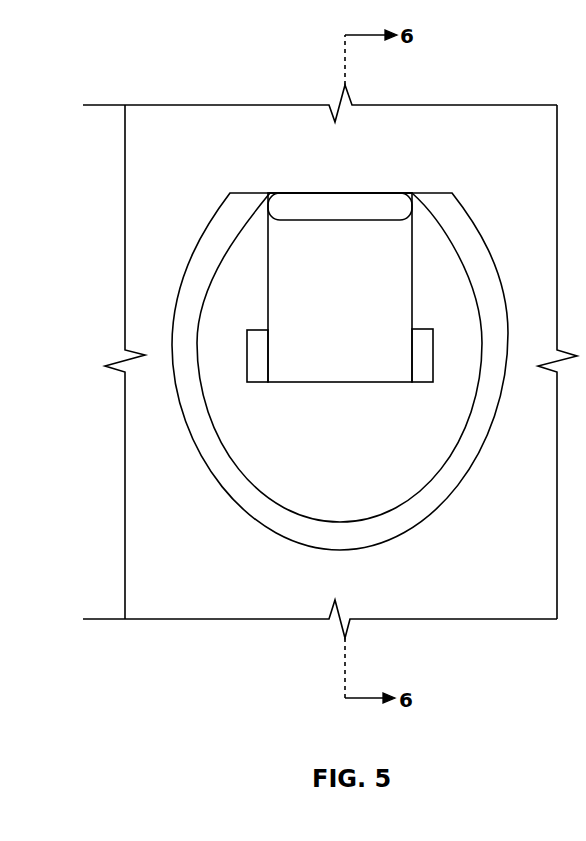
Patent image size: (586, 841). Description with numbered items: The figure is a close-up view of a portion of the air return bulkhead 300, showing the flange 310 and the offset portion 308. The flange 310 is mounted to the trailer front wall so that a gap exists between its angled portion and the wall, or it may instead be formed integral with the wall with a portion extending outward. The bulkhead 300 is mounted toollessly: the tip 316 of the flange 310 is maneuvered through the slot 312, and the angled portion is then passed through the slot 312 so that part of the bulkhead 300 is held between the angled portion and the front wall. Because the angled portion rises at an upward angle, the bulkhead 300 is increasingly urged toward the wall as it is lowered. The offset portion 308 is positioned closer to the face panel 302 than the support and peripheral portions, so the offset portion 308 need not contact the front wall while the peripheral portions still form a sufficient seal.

The air return bulkhead 300 is at (171, 105).
The face panel 302 is at (198, 579).
The offset portion 308 is at (297, 463).
The flange 310 is at (295, 315).
The slot 312 is at (259, 367).
The tip 316 is at (377, 207).